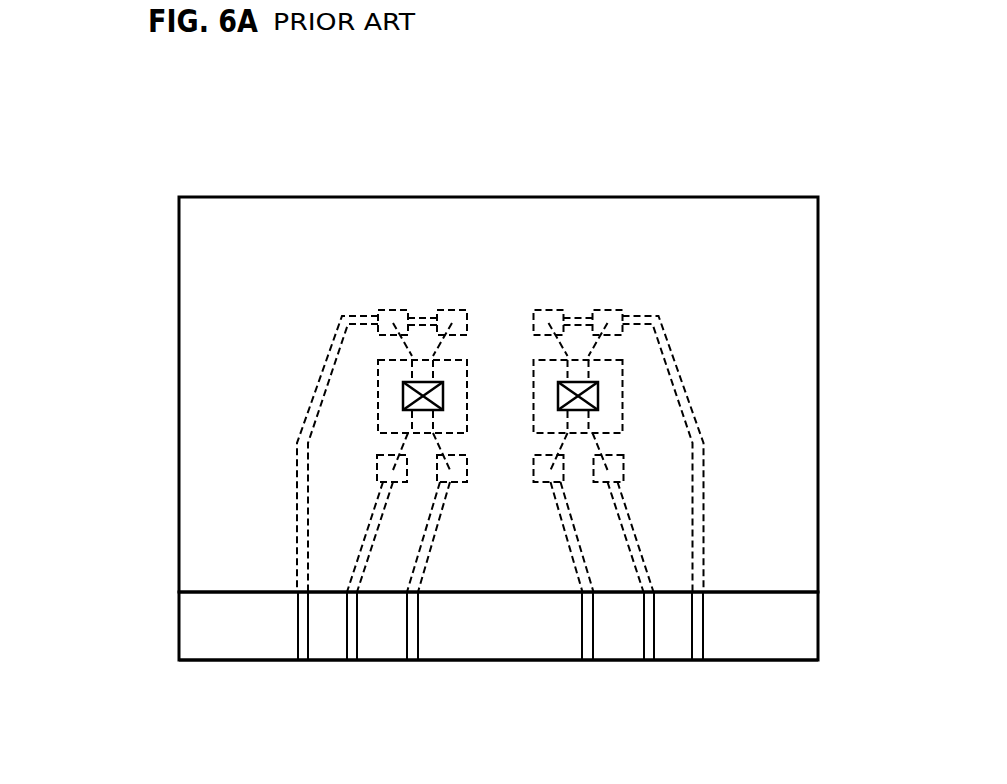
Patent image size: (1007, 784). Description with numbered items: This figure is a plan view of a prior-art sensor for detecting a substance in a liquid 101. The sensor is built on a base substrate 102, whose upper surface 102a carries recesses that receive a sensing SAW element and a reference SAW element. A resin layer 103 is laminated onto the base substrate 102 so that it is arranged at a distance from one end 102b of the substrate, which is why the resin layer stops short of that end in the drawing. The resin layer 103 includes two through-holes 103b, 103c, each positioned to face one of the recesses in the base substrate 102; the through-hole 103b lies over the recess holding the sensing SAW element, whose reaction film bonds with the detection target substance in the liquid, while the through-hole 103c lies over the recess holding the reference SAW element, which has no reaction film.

The sensor for detecting a substance in a liquid 101 is at (189, 172).
The base substrate 102 is at (170, 638).
The upper surface 102a is at (505, 647).
The one end 102b is at (222, 662).
The resin layer 103 is at (282, 217).
The through-hole 103b is at (443, 396).
The through-hole 103c is at (597, 396).